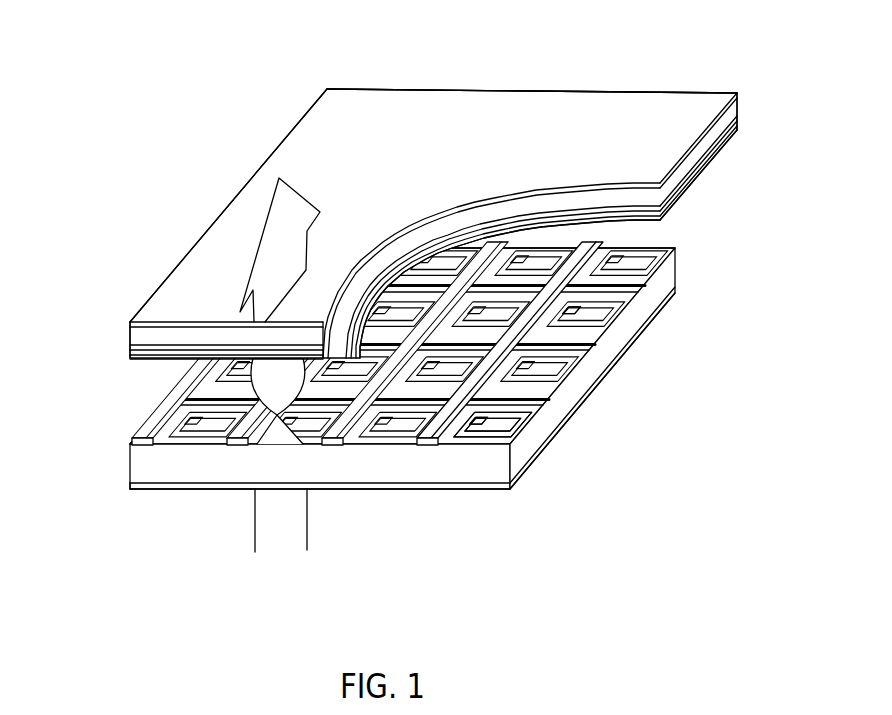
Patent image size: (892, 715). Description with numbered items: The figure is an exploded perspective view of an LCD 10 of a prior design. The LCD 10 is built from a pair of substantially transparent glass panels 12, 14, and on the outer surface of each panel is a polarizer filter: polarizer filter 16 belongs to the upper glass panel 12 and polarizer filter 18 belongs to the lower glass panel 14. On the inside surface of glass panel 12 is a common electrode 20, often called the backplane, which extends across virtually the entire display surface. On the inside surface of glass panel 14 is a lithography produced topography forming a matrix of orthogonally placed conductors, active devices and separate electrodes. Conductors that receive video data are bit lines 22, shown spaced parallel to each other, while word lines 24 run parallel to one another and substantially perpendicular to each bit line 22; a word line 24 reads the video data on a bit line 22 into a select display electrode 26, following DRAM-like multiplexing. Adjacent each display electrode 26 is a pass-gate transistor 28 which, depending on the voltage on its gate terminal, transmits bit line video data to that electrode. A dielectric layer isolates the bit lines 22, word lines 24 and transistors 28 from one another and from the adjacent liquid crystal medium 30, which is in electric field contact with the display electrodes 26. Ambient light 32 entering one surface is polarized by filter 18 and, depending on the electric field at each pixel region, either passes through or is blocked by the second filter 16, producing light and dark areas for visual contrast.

The LCD 10 is at (628, 58).
The glass panel 12 is at (733, 115).
The glass panel 14 is at (671, 270).
The polarizer filter 16 is at (128, 325).
The polarizer filter 18 is at (133, 487).
The common electrode 20 is at (128, 350).
The bit lines 22 is at (437, 434).
The word lines 24 is at (540, 400).
The display electrode 26 is at (500, 430).
The pass-gate transistor 28 is at (572, 307).
The liquid crystal medium 30 is at (128, 357).
The light 32 is at (308, 540).